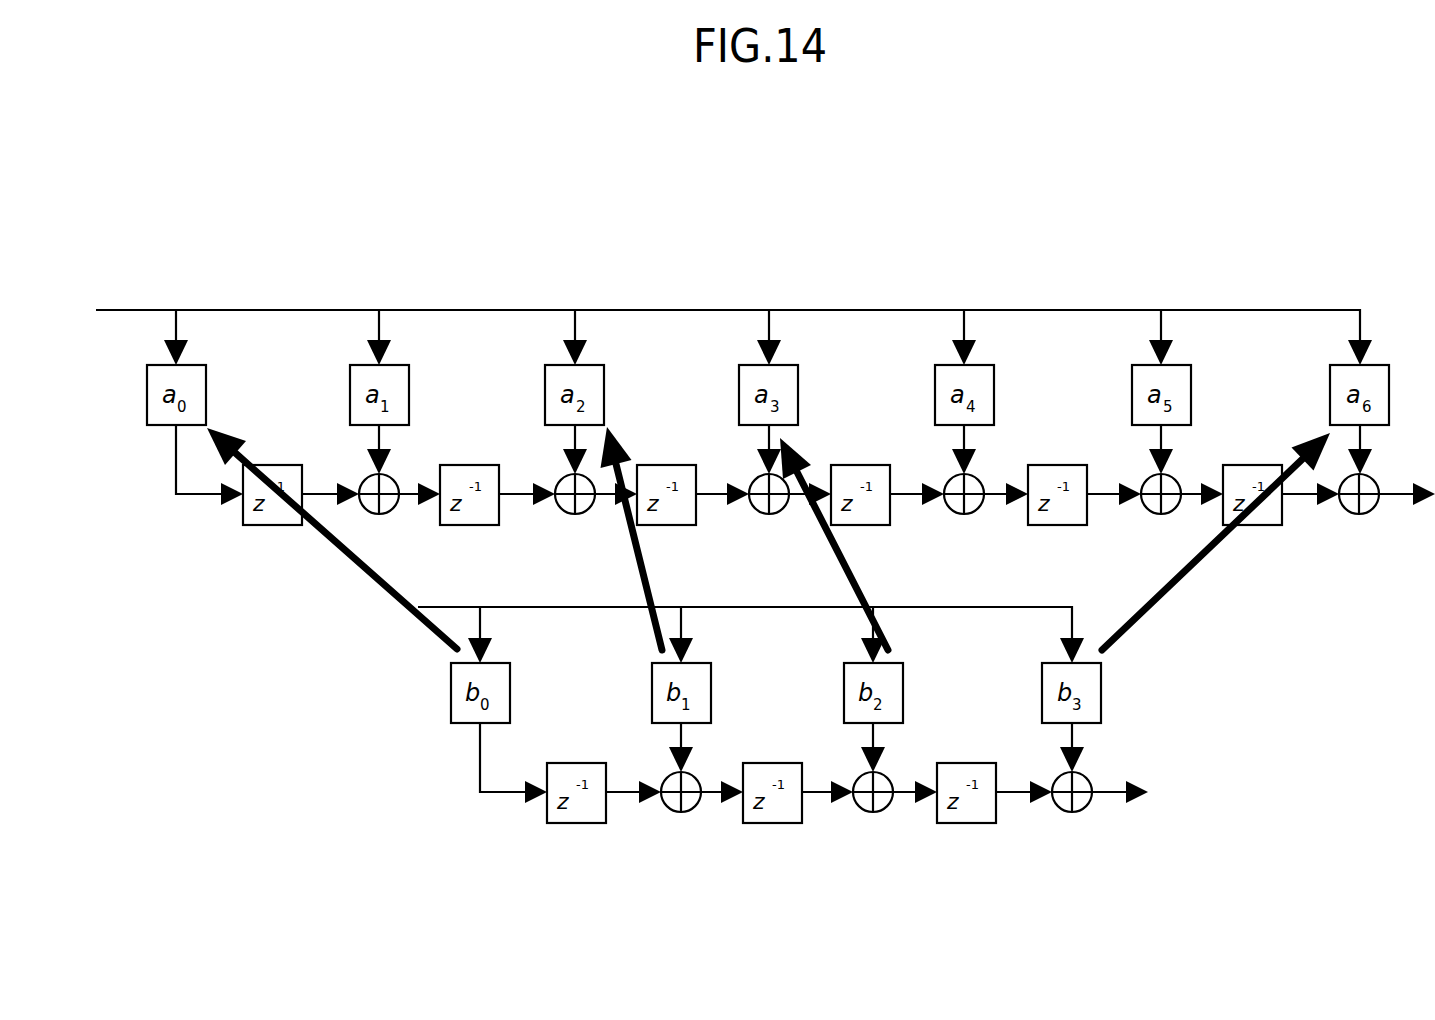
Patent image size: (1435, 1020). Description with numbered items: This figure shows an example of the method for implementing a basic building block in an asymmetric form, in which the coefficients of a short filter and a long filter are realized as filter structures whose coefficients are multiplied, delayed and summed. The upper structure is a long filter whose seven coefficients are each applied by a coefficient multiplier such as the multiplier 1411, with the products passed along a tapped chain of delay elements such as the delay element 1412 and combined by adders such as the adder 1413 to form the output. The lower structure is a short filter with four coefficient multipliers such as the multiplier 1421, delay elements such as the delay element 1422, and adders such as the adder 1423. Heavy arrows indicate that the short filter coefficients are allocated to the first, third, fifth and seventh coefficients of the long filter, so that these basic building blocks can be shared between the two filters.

The coefficient multiplier a1 of first filter 1411 is at (396, 368).
The delay element z^-1 of first filter 1412 is at (1055, 527).
The adder of first filter 1413 is at (1357, 515).
The coefficient multiplier b3 of second filter 1421 is at (1102, 690).
The delay element z^-1 of second filter 1422 is at (775, 824).
The adder of second filter 1423 is at (1070, 812).